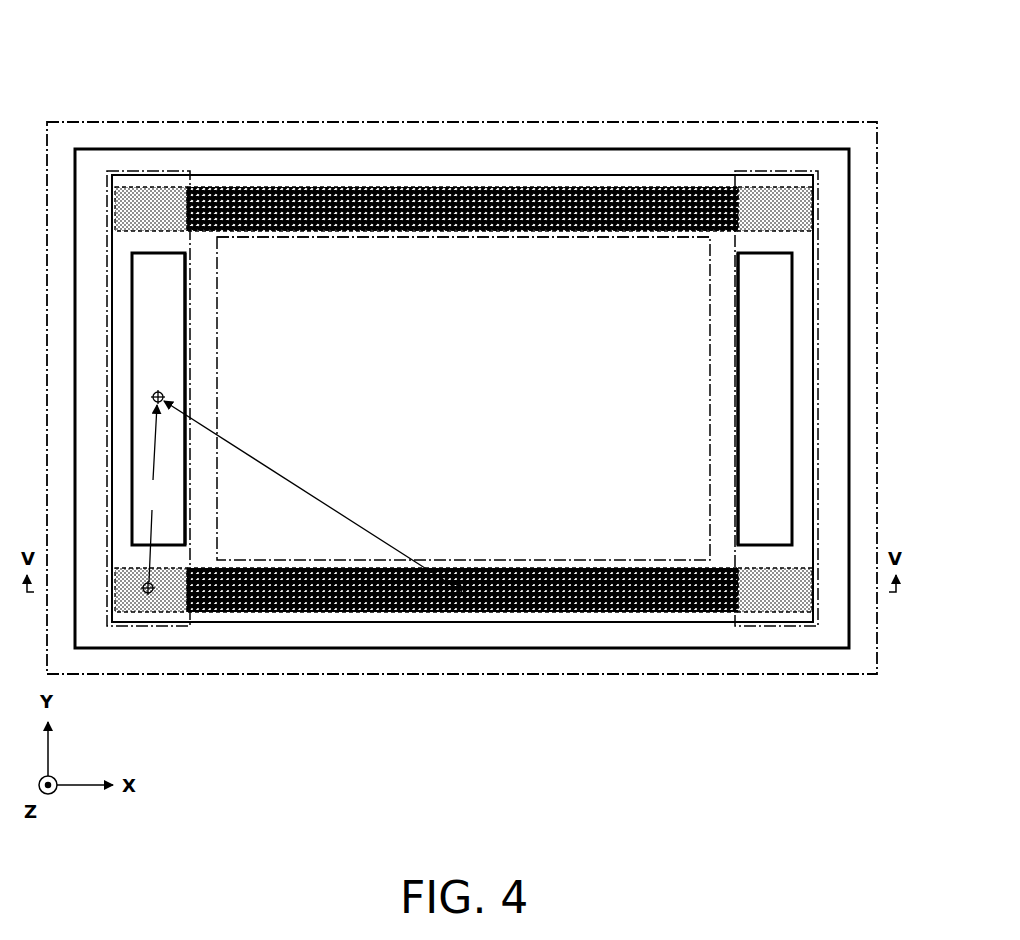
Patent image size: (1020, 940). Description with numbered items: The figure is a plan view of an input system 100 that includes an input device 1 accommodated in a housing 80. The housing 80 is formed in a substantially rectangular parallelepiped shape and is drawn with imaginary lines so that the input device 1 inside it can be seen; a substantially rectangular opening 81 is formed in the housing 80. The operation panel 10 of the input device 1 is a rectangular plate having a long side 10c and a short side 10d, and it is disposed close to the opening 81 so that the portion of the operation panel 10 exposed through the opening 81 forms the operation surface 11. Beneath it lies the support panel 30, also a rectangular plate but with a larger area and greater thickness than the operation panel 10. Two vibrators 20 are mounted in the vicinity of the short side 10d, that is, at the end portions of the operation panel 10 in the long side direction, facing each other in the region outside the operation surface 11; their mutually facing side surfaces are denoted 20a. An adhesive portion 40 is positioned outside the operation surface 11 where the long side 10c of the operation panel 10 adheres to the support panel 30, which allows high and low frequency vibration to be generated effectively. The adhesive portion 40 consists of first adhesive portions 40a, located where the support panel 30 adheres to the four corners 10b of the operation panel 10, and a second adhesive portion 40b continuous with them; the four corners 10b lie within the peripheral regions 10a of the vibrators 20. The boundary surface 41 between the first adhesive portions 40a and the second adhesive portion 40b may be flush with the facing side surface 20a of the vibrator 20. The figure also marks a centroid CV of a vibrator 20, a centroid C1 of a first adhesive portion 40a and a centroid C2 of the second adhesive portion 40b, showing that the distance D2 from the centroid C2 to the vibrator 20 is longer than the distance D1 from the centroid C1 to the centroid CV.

The input device 1 is at (750, 117).
The input system 100 is at (669, 74).
The operation panel 10 is at (590, 172).
The peripheral regions 10a is at (172, 170).
The four corners 10b is at (136, 205).
The long side 10c is at (464, 175).
The short side 10d is at (815, 400).
The operation surface 11 is at (463, 398).
The vibrators 20 is at (160, 275).
The side surfaces 20a is at (165, 399).
The support panel 30 is at (524, 148).
The adhesive portion 40 is at (528, 800).
The first adhesive portions 40a is at (167, 612).
The second adhesive portion 40b is at (587, 613).
The boundary surface 41 is at (220, 240).
The housing 80 is at (87, 121).
The opening 81 is at (327, 236).
The centroid of vibrator CV is at (163, 395).
The centroid of first adhesive portion C1 is at (150, 594).
The centroid of second adhesive portion C2 is at (458, 595).
The distance D1 is at (154, 493).
The distance D2 is at (308, 493).